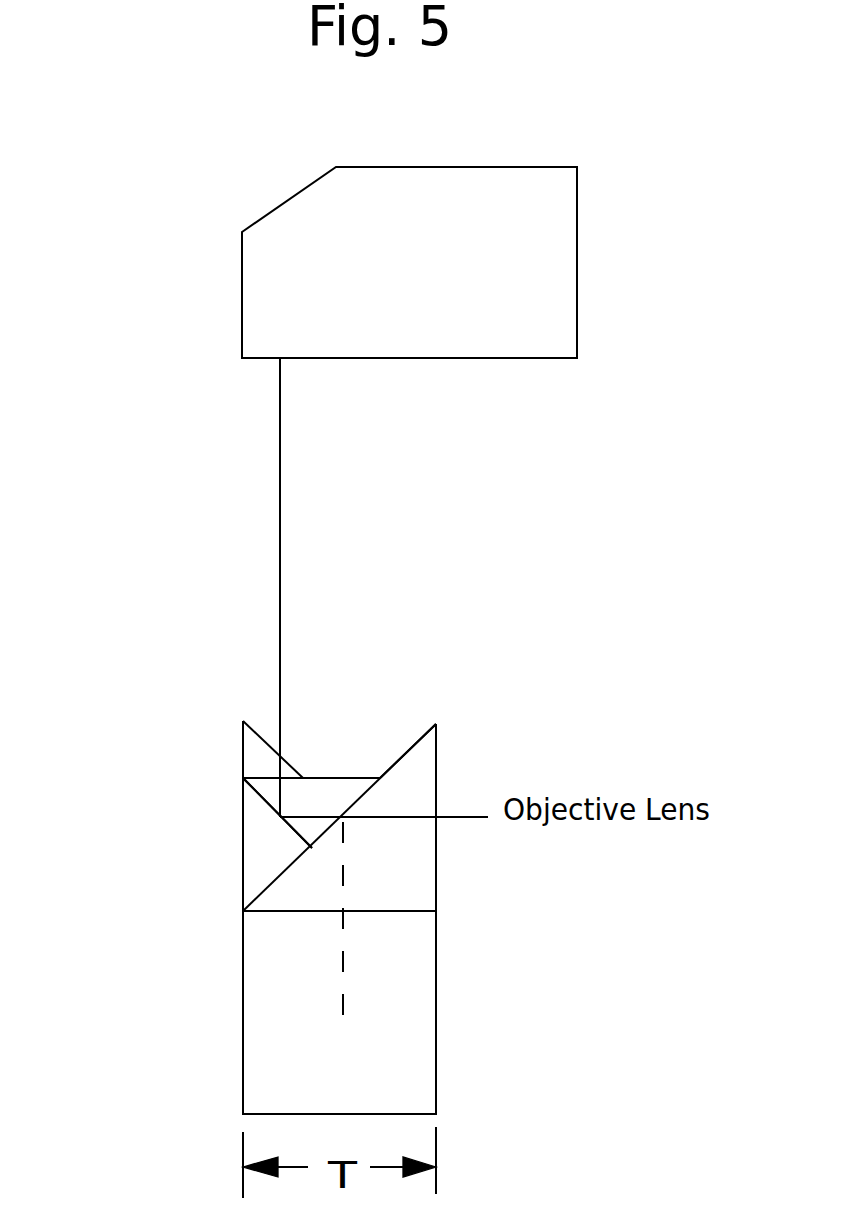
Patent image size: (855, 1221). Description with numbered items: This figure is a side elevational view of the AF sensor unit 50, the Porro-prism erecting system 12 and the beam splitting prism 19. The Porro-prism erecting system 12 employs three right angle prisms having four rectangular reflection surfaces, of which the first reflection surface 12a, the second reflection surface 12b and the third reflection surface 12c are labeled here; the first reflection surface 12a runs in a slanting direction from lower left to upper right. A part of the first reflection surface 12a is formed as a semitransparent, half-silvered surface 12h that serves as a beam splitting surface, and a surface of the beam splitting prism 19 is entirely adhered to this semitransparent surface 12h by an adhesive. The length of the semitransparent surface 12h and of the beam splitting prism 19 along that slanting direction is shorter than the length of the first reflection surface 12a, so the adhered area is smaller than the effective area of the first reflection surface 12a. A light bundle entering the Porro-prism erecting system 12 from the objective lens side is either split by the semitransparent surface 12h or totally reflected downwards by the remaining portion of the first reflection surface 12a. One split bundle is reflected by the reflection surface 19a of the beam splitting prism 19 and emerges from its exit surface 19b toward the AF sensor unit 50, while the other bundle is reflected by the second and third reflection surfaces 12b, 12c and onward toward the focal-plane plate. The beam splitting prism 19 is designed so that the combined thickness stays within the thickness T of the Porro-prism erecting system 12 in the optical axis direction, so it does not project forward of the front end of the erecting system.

The AF sensor unit 50 is at (535, 193).
The Porro-prism erecting system 12 is at (407, 965).
The first reflection surface 12a is at (422, 733).
The second reflection surface 12b is at (382, 1067).
The third reflection surface 12c is at (492, 1084).
The semitransparent surface 12h is at (320, 833).
The beam splitting prism 19 is at (340, 785).
The reflection surface 19a is at (263, 802).
The exit surface 19b is at (321, 778).